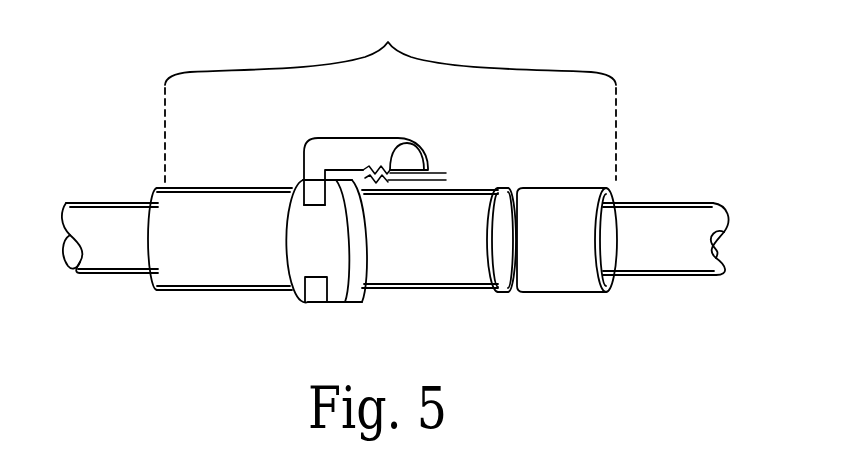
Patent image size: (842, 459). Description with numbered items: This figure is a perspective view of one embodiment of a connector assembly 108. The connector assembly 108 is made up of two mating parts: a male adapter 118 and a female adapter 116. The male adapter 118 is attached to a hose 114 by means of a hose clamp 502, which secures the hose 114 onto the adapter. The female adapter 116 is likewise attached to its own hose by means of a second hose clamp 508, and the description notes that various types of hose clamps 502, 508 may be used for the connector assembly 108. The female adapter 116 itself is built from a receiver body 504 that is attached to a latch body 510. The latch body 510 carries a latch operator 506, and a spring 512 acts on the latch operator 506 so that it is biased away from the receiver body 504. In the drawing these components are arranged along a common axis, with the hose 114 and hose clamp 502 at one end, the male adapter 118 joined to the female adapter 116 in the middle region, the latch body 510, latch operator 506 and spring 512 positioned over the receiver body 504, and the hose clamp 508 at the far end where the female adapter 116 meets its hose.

The connector assembly 108 is at (390, 99).
The hose 114 is at (110, 201).
The female adapter 116 is at (641, 153).
The male adapter 118 is at (660, 275).
The hose clamp 502 is at (215, 291).
The receiver body 504 is at (427, 289).
The latch operator 506 is at (367, 137).
The hose clamp 508 is at (566, 289).
The latch body 510 is at (303, 302).
The spring 512 is at (446, 176).